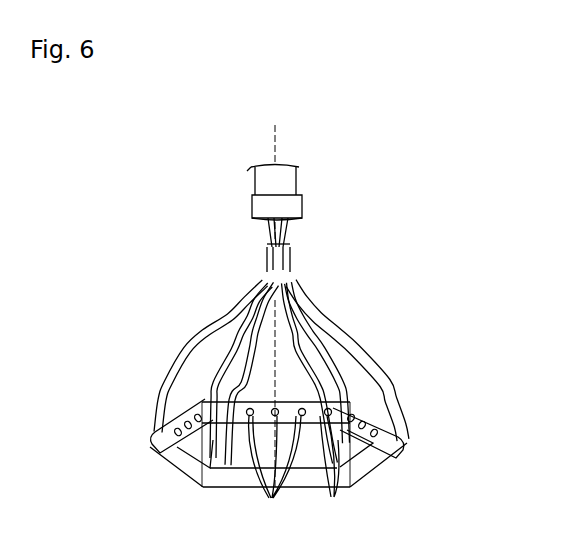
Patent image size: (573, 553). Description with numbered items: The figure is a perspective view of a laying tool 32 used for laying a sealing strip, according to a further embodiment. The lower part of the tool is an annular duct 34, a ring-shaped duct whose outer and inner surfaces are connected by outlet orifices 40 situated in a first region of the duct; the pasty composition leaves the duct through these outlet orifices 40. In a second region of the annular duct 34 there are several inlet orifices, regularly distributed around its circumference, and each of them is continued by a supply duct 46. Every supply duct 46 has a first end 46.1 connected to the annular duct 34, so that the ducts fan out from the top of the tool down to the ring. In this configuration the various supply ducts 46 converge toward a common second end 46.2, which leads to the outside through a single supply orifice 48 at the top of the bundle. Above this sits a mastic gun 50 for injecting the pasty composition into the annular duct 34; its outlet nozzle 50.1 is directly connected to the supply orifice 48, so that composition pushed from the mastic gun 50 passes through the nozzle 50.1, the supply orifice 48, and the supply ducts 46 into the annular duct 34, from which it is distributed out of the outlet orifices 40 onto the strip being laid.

The laying tool 32 is at (216, 293).
The annular duct 34 is at (380, 471).
The outlet orifices 40 is at (297, 469).
The supply duct 46 is at (247, 333).
The first end 46.1 is at (190, 470).
The second end 46.2 is at (290, 268).
The supply orifice 48 is at (284, 243).
The mastic gun 50 is at (300, 180).
The outlet nozzle 50.1 is at (271, 248).